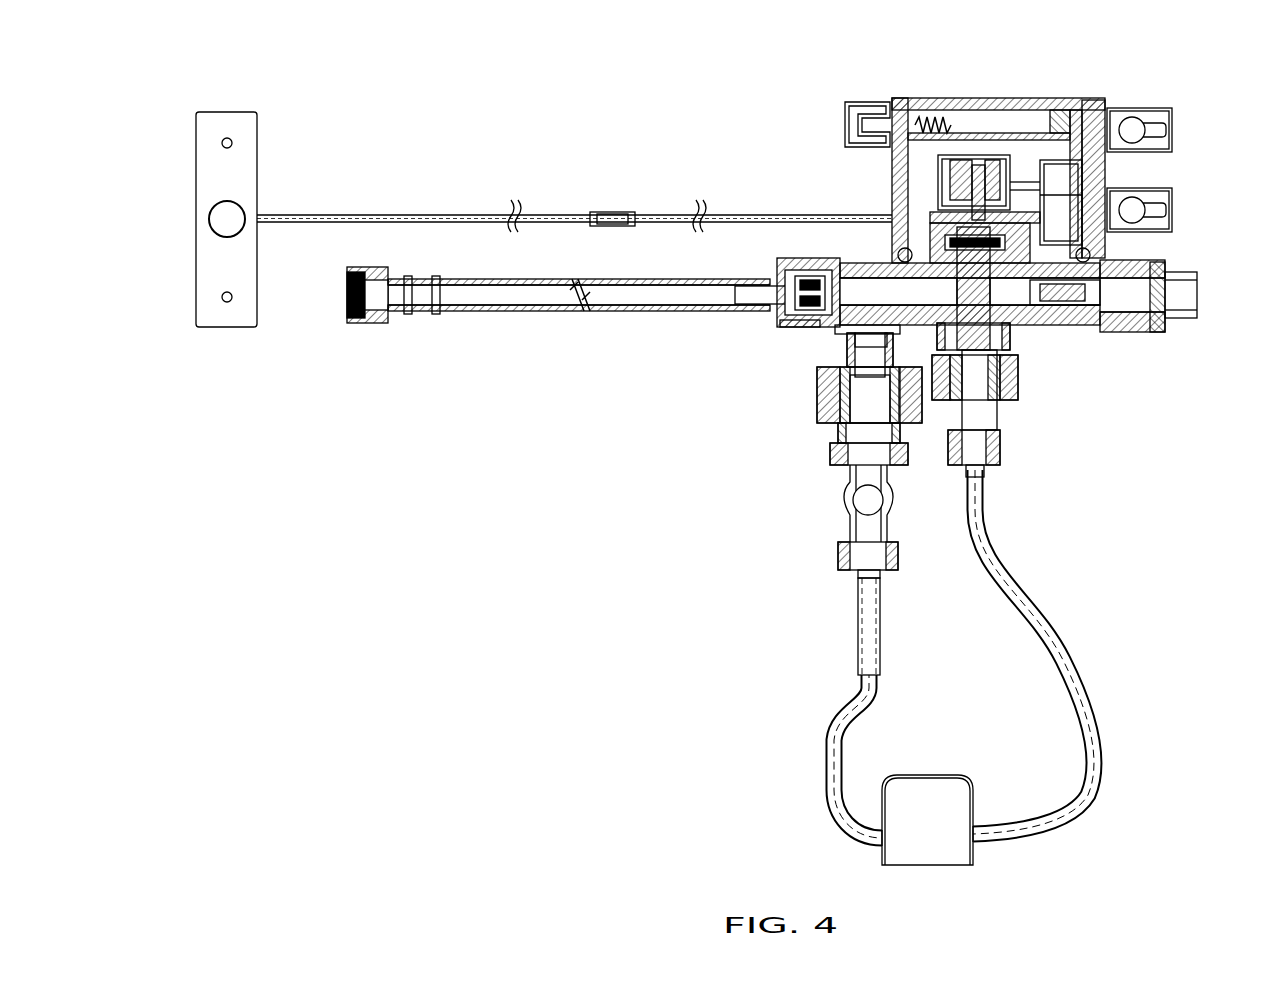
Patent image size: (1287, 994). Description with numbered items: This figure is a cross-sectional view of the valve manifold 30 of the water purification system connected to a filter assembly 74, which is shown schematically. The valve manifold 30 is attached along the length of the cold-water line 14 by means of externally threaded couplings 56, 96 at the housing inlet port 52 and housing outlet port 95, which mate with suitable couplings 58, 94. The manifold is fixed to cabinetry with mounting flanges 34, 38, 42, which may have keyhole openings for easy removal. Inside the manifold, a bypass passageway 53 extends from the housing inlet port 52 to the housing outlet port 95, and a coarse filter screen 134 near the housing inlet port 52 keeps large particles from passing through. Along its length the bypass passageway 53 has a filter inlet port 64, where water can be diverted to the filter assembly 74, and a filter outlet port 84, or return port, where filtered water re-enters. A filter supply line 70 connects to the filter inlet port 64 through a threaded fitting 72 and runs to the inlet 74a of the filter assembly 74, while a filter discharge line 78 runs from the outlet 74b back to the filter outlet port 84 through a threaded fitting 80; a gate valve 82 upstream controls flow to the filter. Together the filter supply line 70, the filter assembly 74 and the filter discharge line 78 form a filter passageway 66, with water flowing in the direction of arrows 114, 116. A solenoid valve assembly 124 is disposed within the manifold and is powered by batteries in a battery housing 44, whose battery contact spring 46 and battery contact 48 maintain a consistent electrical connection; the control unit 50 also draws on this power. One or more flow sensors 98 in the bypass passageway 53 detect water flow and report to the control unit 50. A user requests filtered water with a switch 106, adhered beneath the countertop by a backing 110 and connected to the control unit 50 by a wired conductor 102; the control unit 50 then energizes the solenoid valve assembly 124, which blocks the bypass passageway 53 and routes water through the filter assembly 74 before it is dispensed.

The cold-water line 14 is at (518, 316).
The valve manifold 30 is at (1184, 130).
The mounting flange 34 is at (862, 100).
The mounting flange 38 is at (1150, 108).
The mounting flange 42 is at (1165, 220).
The battery housing 44 is at (1008, 128).
The battery contact spring 46 is at (935, 124).
The battery contact 48 is at (1056, 114).
The control unit 50 is at (1098, 180).
The housing inlet port 52 is at (813, 332).
The bypass passageway 53 is at (858, 290).
The externally threaded coupling 56 is at (823, 258).
The coupling 58 is at (790, 330).
The filter inlet port 64 is at (850, 343).
The filter passageway 66 is at (975, 415).
The filter supply line 70 is at (827, 795).
The threaded fitting 72 is at (815, 408).
The filter assembly 74 is at (925, 790).
The inlet of the filter assembly 74a is at (880, 842).
The outlet of the filter assembly 74b is at (975, 840).
The filter discharge line 78 is at (1093, 752).
The threaded fitting 80 is at (1020, 378).
The gate valve 82 is at (868, 530).
The filter outlet port 84 is at (1010, 335).
The coupling 94 is at (1163, 325).
The housing outlet port 95 is at (1187, 303).
The externally threaded coupling 96 is at (1140, 260).
The flow sensor 98 is at (1090, 298).
The wired conductor 102 is at (390, 215).
The switch 106 is at (222, 225).
The backing 110 is at (240, 143).
The arrow 114 is at (765, 538).
The arrow 116 is at (1090, 568).
The solenoid valve assembly 124 is at (1020, 165).
The coarse filter screen 134 is at (777, 272).